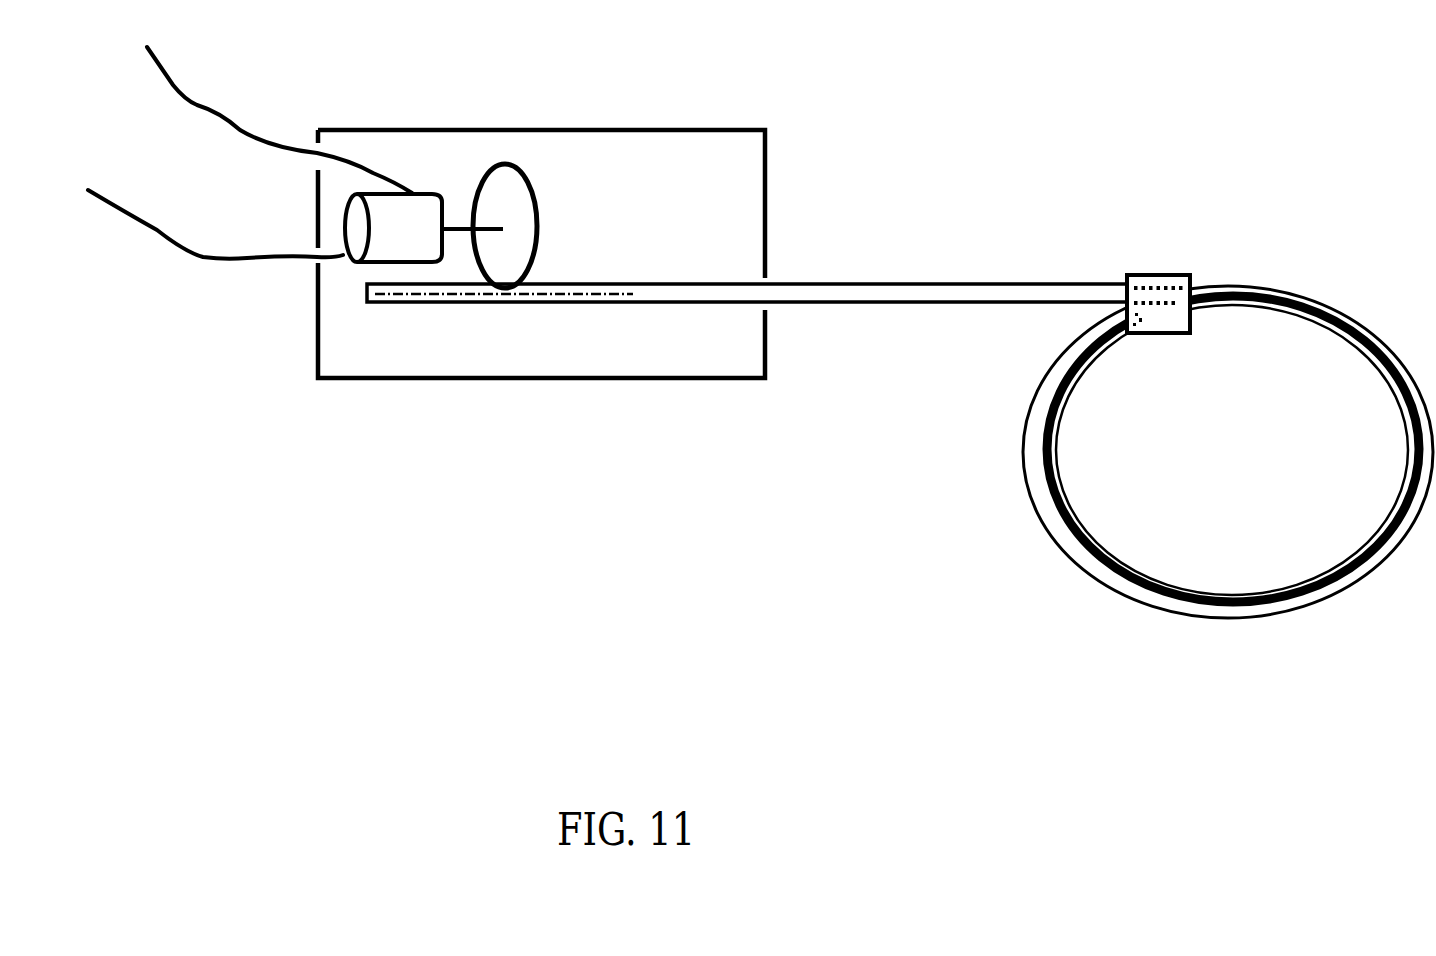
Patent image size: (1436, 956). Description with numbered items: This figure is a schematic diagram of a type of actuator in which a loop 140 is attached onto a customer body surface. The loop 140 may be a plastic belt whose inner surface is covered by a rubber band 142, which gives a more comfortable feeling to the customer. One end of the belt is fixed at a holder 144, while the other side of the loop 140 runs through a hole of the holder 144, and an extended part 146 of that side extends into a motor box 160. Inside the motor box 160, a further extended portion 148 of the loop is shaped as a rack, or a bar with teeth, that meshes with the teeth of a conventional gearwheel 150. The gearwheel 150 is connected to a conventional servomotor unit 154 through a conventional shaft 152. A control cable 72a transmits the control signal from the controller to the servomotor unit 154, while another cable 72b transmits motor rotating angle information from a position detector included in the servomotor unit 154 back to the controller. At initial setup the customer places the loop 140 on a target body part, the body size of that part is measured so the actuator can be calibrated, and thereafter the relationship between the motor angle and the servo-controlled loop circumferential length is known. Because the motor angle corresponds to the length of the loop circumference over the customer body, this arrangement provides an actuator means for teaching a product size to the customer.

The control cable 72a is at (230, 102).
The cable 72b is at (107, 220).
The loop 140 is at (1228, 402).
The rubber band 142 is at (1362, 368).
The holder 144 is at (1162, 268).
The extended part 146 is at (845, 280).
The further extended portion 148 is at (580, 281).
The gearwheel 150 is at (533, 175).
The shaft 152 is at (458, 223).
The servomotor unit 154 is at (367, 229).
The motor box 160 is at (628, 126).